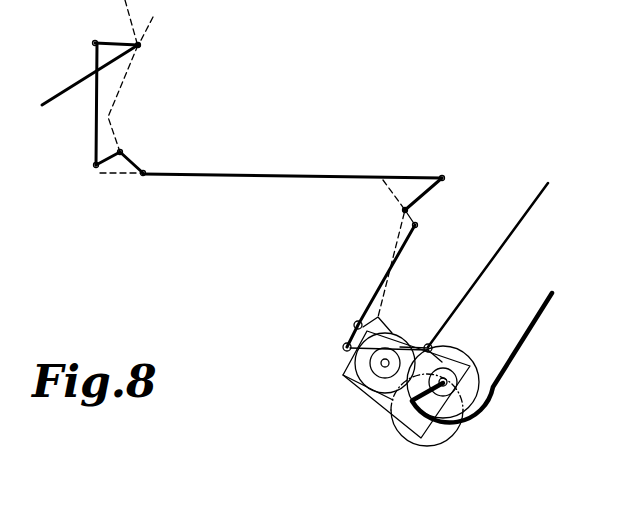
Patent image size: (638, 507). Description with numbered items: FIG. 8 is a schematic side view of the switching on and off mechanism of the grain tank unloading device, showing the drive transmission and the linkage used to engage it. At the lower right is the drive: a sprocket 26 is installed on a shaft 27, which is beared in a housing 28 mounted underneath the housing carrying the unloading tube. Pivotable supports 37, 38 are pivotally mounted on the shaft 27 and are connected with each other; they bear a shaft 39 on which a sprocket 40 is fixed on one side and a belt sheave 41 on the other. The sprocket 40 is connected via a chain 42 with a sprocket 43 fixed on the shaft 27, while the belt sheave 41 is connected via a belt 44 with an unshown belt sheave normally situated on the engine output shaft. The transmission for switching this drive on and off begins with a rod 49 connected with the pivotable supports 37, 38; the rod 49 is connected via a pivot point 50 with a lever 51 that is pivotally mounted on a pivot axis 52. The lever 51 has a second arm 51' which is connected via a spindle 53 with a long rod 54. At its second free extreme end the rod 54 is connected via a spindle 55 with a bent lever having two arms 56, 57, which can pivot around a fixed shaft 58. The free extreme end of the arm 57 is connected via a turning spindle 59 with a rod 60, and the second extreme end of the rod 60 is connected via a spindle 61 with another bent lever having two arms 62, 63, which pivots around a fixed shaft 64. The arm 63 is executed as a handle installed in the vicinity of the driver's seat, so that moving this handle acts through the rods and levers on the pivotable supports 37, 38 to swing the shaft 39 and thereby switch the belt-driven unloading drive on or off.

The sprocket 26 is at (368, 380).
The shaft 27 is at (387, 360).
The housing 28 is at (358, 3).
The pivotable support 37 is at (482, 358).
The pivotable support 38 is at (470, 354).
The shaft 39 is at (479, 393).
The sprocket 40 is at (468, 409).
The belt sheave 41 is at (492, 380).
The chain 42 is at (390, 405).
The sprocket 43 is at (365, 388).
The belt 44 is at (526, 214).
The rod 49 is at (378, 288).
The pivot point 50 is at (418, 225).
The lever 51 is at (397, 224).
The second arm 51' is at (432, 194).
The pivot axis 52 is at (403, 210).
The spindle 53 is at (444, 177).
The rod 54 is at (258, 178).
The spindle 55 is at (143, 176).
The arm 56 is at (134, 164).
The arm 57 is at (106, 168).
The fixed shaft 58 is at (122, 151).
The turning spindle 59 is at (94, 166).
The rod 60 is at (95, 132).
The spindle 61 is at (95, 43).
The arm 62 is at (112, 44).
The arm 63 is at (50, 97).
The fixed shaft 64 is at (140, 46).